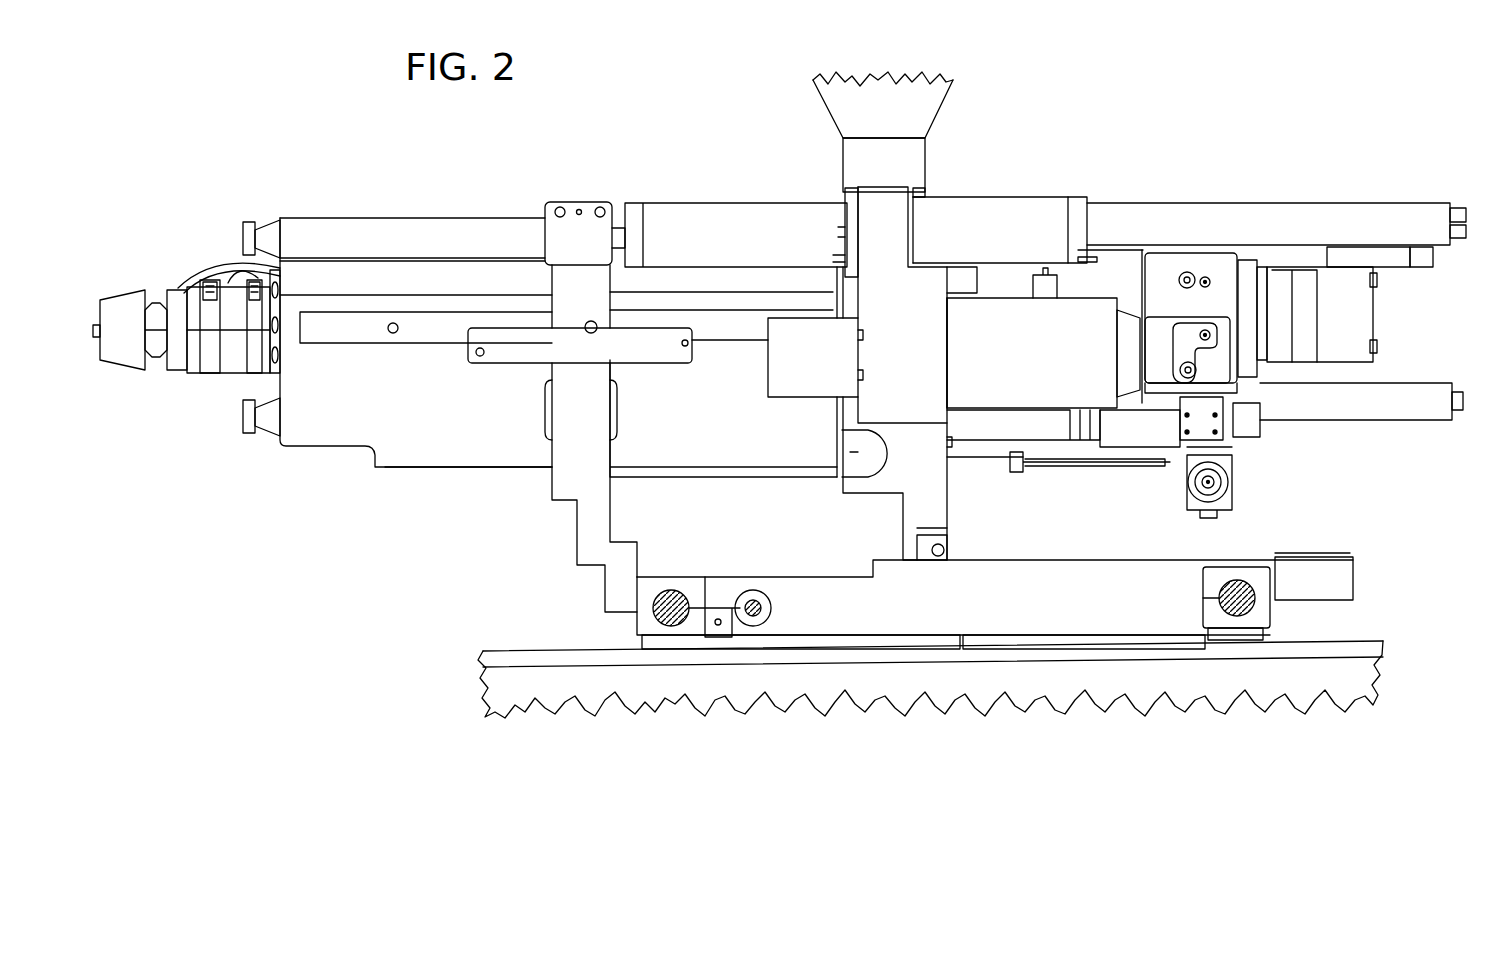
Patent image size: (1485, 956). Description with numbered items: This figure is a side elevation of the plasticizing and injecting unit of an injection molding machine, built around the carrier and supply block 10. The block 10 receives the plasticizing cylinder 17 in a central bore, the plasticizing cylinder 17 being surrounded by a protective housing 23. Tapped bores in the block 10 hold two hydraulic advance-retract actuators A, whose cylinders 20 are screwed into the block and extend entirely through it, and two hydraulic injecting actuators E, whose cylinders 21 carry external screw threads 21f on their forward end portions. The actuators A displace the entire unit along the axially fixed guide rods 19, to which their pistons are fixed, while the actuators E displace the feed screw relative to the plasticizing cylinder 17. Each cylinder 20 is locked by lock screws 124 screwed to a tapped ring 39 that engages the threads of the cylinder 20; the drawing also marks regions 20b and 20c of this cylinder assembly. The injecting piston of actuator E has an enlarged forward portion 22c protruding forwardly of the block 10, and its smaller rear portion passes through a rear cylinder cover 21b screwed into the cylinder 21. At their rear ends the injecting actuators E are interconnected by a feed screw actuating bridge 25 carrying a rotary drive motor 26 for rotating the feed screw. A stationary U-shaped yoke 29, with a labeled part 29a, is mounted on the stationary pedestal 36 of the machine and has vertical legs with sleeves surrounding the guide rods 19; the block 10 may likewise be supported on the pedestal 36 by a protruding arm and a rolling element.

The carrier and supply block 10 is at (871, 516).
The plasticizing cylinder 17 is at (183, 285).
The guide rods 19 is at (390, 237).
The cylinder 20 is at (953, 253).
The cylinder end block 20b is at (637, 228).
The cylinder front end 20c is at (917, 230).
The cylinder 21 is at (1070, 358).
The rear cylinder cover 21b is at (1127, 320).
The external screw threads 21f is at (947, 357).
The forward portion 22c is at (805, 378).
The protective housing 23 is at (670, 435).
The feed screw actuating bridge 25 is at (1208, 236).
The rotary drive motor 26 is at (1353, 312).
The U-shaped yoke 29 is at (560, 415).
The support head 29a is at (573, 240).
The pedestal 36 is at (1110, 618).
The tapped ring 39 is at (852, 207).
The lock screws 124 is at (840, 233).
The hydraulic advance-retract actuator A is at (1066, 178).
The hydraulic injecting actuator E is at (1024, 280).